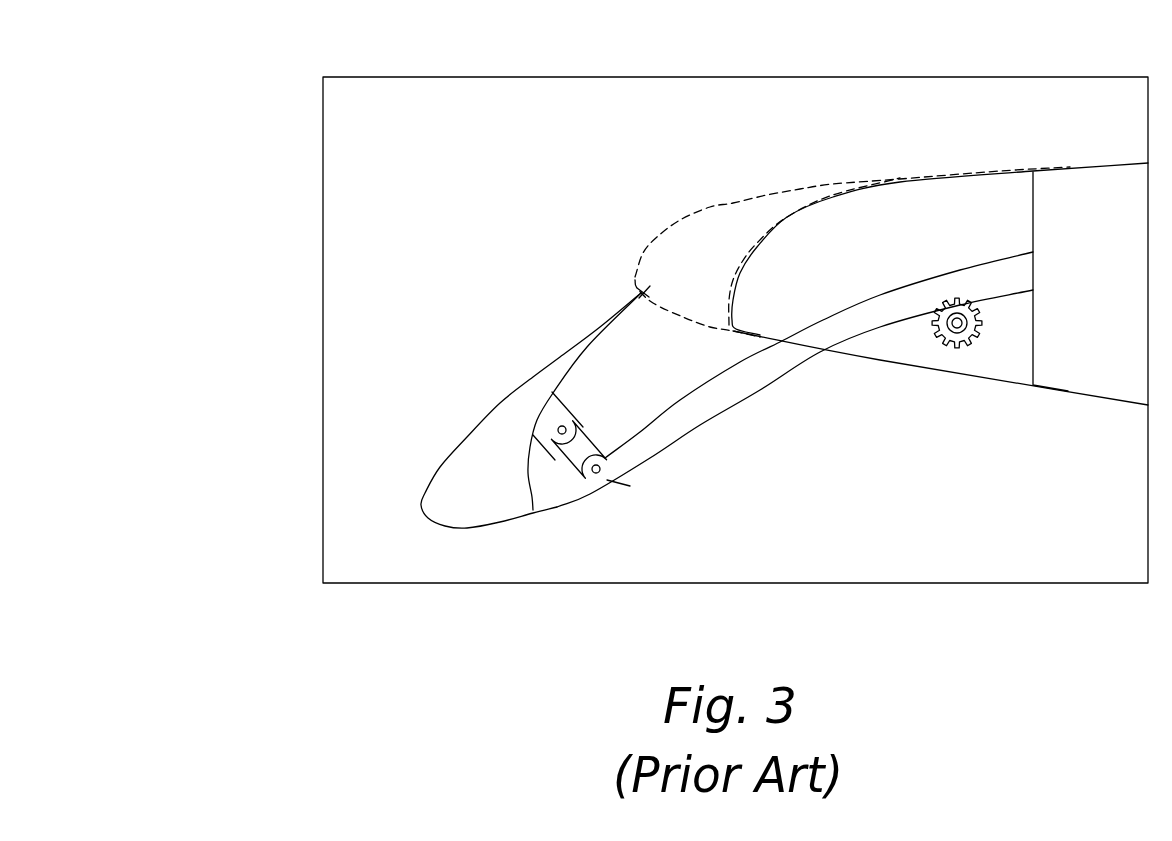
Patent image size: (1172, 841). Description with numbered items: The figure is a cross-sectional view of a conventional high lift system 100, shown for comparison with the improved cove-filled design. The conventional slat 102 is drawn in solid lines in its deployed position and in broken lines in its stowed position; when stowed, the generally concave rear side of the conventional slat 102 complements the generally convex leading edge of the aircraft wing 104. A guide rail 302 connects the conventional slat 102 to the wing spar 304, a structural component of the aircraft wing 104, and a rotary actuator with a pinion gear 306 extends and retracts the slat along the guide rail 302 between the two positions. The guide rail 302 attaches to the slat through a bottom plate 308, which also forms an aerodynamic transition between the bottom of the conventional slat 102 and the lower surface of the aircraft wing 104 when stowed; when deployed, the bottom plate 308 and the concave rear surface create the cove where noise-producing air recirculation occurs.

The conventional high lift system 100 is at (283, 70).
The conventional slat 102 is at (515, 377).
The aircraft wing 104 is at (980, 202).
The guide rail 302 is at (720, 388).
The wing spar 304 is at (1035, 220).
The pinion gear 306 is at (957, 348).
The bottom plate 308 is at (587, 497).